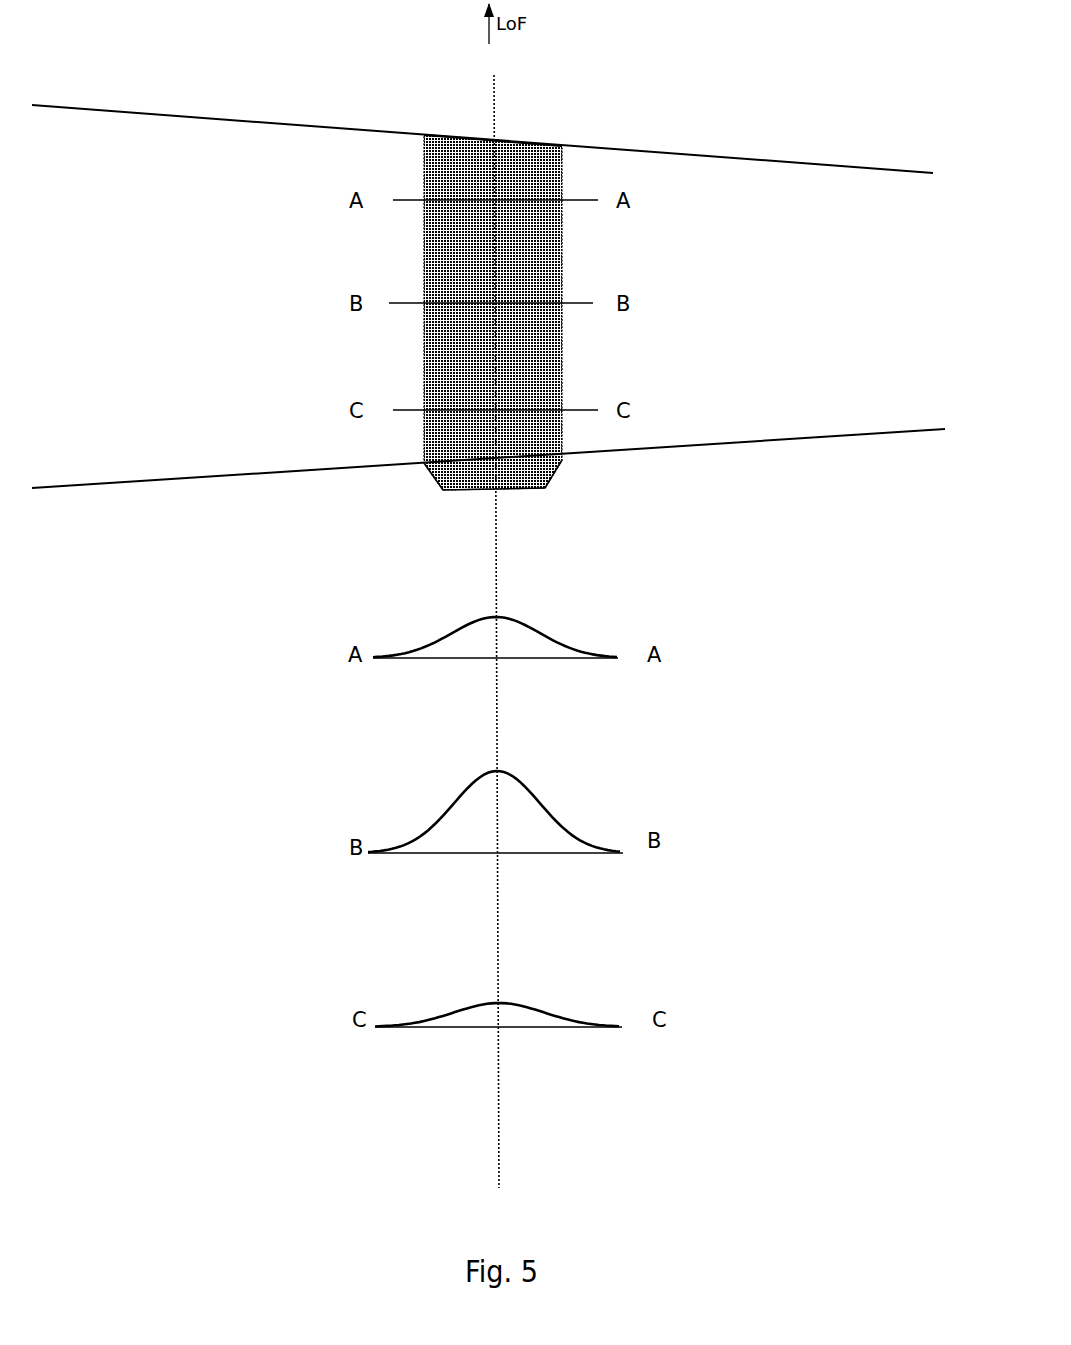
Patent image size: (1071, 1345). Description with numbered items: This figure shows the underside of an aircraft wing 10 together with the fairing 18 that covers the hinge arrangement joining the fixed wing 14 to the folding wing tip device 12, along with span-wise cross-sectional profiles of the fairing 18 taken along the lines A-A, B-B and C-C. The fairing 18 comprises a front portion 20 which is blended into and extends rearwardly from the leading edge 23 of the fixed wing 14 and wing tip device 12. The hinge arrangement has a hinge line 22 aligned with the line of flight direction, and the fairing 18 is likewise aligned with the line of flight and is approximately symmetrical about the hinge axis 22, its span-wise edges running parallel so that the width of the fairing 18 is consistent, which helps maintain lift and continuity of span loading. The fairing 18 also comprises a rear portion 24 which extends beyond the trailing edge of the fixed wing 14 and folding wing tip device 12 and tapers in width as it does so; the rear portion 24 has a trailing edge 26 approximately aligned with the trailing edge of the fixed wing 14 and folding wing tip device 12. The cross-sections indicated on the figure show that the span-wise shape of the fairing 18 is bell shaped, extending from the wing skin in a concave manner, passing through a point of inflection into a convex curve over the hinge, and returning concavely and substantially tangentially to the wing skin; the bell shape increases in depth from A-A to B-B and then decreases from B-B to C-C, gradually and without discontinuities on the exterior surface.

The wing 10 is at (752, 95).
The wing tip device 12 is at (772, 220).
The fixed wing 14 is at (188, 178).
The fairing 18 is at (533, 177).
The front portion 20 is at (447, 177).
The hinge line 22 is at (493, 100).
The leading edge 23 is at (501, 135).
The rear portion 24 is at (525, 492).
The trailing edge 26 is at (365, 468).